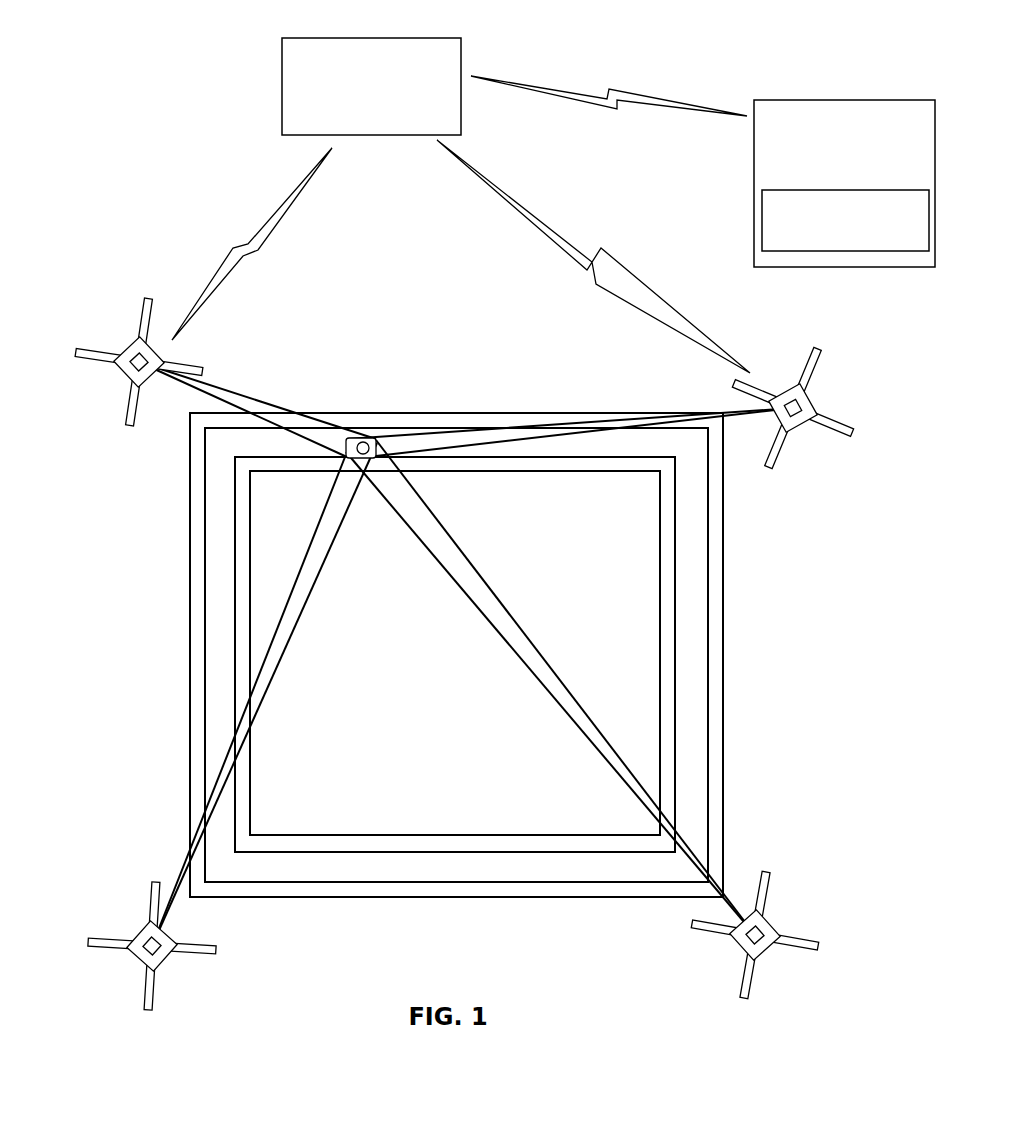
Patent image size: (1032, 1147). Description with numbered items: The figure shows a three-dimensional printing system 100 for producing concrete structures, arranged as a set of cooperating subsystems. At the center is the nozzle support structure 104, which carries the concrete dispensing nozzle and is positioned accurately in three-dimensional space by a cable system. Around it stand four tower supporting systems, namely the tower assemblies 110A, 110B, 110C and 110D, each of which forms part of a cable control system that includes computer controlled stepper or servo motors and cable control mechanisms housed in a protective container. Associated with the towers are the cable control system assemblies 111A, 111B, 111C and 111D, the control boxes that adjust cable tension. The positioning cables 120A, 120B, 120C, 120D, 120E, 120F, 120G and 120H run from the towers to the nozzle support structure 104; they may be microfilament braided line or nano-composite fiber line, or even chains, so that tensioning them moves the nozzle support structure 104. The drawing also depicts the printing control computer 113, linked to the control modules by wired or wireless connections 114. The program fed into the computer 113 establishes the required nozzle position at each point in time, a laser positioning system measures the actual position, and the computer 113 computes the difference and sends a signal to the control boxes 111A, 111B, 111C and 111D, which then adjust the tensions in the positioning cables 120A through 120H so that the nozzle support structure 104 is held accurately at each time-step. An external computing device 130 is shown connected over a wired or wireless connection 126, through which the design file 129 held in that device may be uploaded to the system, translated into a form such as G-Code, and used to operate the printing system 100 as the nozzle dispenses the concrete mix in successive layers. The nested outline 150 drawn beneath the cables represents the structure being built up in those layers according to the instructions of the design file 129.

The 3D printing system 100 is at (168, 88).
The nozzle support structure 104 is at (370, 430).
The tower assembly 110A is at (113, 360).
The tower assembly 110B is at (814, 397).
The tower assembly 110C is at (793, 935).
The tower assembly 110D is at (145, 946).
The cable control system assembly 111A is at (123, 373).
The cable control system assembly 111B is at (814, 397).
The cable control system assembly 111C is at (772, 925).
The cable control system assembly 111D is at (172, 962).
The 3D printing control computer 113 is at (371, 86).
The wired or wireless connections 114 is at (270, 198).
The positioning cable 120A is at (235, 390).
The positioning cable 120B is at (285, 416).
The positioning cable 120C is at (447, 430).
The positioning cable 120D is at (567, 431).
The positioning cable 120E is at (512, 650).
The positioning cable 120F is at (578, 695).
The positioning cable 120G is at (300, 640).
The positioning cable 120H is at (252, 700).
The wired or wireless connection 126 is at (631, 76).
The design file 129 is at (845, 220).
The external computing device 130 is at (797, 183).
The structure 150 is at (697, 662).